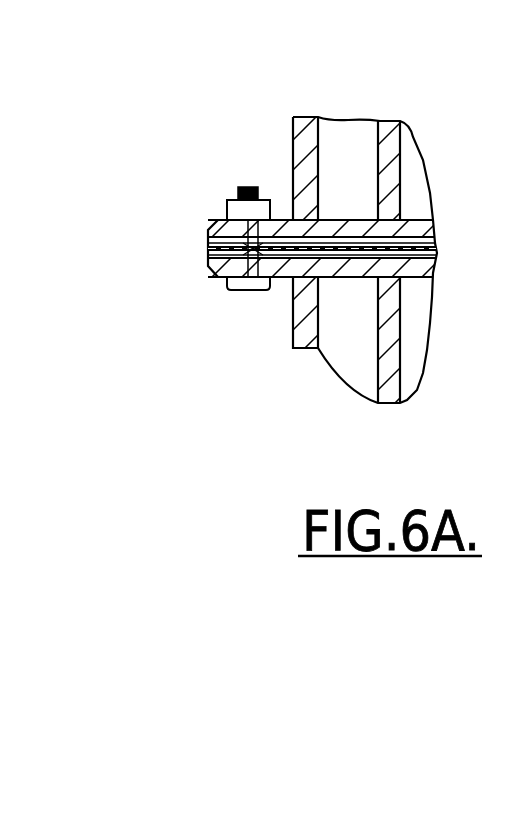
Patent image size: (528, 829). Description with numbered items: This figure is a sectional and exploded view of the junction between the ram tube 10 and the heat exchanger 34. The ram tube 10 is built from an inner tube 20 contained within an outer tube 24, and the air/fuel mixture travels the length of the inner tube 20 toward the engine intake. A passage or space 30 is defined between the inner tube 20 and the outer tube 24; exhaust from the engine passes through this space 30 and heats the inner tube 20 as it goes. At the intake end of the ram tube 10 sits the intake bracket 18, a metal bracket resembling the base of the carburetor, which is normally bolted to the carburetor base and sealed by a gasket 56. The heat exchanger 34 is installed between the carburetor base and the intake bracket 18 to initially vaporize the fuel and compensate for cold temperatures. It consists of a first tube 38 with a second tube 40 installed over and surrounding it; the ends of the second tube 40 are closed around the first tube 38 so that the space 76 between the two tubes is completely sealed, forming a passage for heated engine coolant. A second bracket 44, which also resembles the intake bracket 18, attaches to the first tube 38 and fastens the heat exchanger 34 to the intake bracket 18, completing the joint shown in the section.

The ram tube 10 is at (278, 440).
The intake bracket 18 is at (208, 275).
The inner tube 20 is at (380, 352).
The outer tube 24 is at (293, 307).
The space 30 is at (340, 345).
The heat exchanger 34 is at (283, 88).
The first tube 38 is at (403, 124).
The second tube 40 is at (293, 140).
The second bracket 44 is at (218, 217).
The gasket 56 is at (208, 248).
The space 76 is at (360, 135).